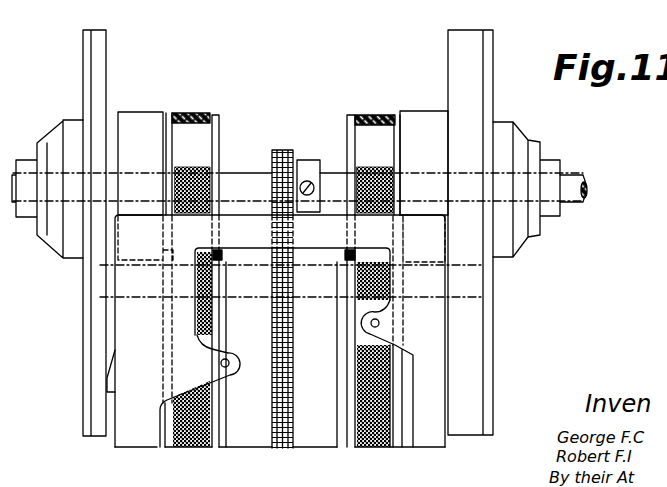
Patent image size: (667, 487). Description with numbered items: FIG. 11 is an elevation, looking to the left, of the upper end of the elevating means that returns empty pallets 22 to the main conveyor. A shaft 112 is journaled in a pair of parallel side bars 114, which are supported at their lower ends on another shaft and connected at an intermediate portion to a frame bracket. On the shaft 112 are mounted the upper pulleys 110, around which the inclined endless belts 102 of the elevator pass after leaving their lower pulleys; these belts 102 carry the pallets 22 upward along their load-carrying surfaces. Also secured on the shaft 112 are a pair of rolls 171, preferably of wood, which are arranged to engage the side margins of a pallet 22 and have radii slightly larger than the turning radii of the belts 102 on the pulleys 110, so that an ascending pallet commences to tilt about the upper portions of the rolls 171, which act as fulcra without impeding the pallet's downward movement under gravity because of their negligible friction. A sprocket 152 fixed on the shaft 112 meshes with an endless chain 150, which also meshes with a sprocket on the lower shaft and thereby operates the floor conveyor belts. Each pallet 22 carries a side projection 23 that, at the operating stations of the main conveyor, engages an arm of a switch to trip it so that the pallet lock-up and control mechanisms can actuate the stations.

The side bars 114 is at (83, 68).
The rolls 171 is at (139, 110).
The upper pulleys 110 is at (222, 136).
The endless belts 102 is at (193, 134).
The sprocket 152 is at (298, 163).
The endless chain 150 is at (292, 378).
The shaft 112 is at (578, 181).
The pallets 22 is at (115, 330).
The side projection 23 is at (110, 377).